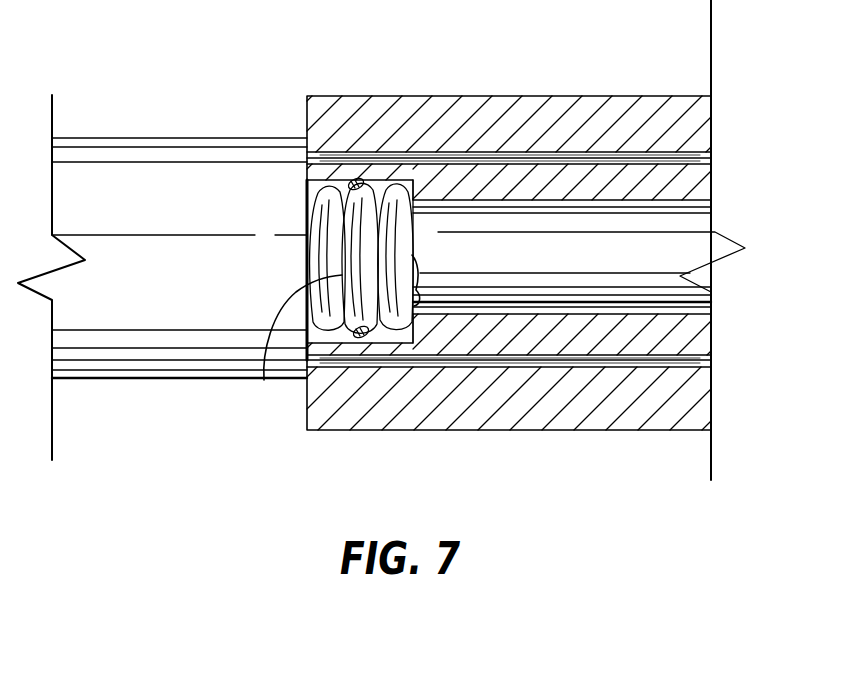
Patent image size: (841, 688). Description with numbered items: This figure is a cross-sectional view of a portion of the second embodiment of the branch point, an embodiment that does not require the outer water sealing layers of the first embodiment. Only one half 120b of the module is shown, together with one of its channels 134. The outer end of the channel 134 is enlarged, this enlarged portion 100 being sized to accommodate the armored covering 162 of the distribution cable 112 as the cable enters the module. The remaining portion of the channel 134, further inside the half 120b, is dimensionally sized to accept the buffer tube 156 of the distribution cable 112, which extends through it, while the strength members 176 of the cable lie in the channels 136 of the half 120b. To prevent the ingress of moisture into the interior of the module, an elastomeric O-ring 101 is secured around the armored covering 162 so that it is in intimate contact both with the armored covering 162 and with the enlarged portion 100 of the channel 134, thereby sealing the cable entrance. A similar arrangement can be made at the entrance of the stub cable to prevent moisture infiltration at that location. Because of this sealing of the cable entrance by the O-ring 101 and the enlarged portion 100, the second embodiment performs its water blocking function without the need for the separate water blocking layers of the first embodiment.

The enlarged portion 100 is at (318, 196).
The elastomeric O-ring 101 is at (352, 180).
The distribution cable 112 is at (120, 380).
The half 120b is at (628, 48).
The channel 134 is at (688, 209).
The channel 136 is at (677, 152).
The buffer tube 156 is at (620, 261).
The armored covering 162 is at (266, 381).
The strength members 176 is at (702, 156).